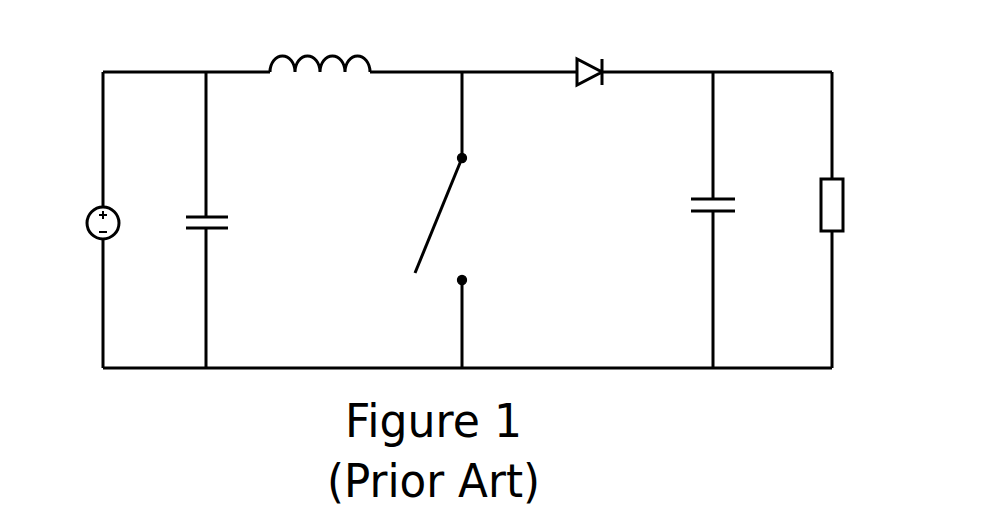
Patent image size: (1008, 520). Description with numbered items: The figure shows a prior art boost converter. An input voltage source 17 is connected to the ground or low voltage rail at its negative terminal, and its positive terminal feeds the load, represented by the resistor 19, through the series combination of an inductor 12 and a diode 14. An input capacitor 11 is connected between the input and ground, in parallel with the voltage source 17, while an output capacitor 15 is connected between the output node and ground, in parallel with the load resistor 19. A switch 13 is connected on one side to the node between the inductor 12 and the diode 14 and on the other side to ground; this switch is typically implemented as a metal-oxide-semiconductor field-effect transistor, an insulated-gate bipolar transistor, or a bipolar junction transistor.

The input capacitor Cin 11 is at (224, 199).
The inductor L 12 is at (319, 42).
The switch S0 13 is at (490, 210).
The diode D0 14 is at (583, 45).
The output capacitor Co 15 is at (701, 185).
The input voltage source Vin 17 is at (66, 206).
The load resistor Ro 19 is at (856, 204).